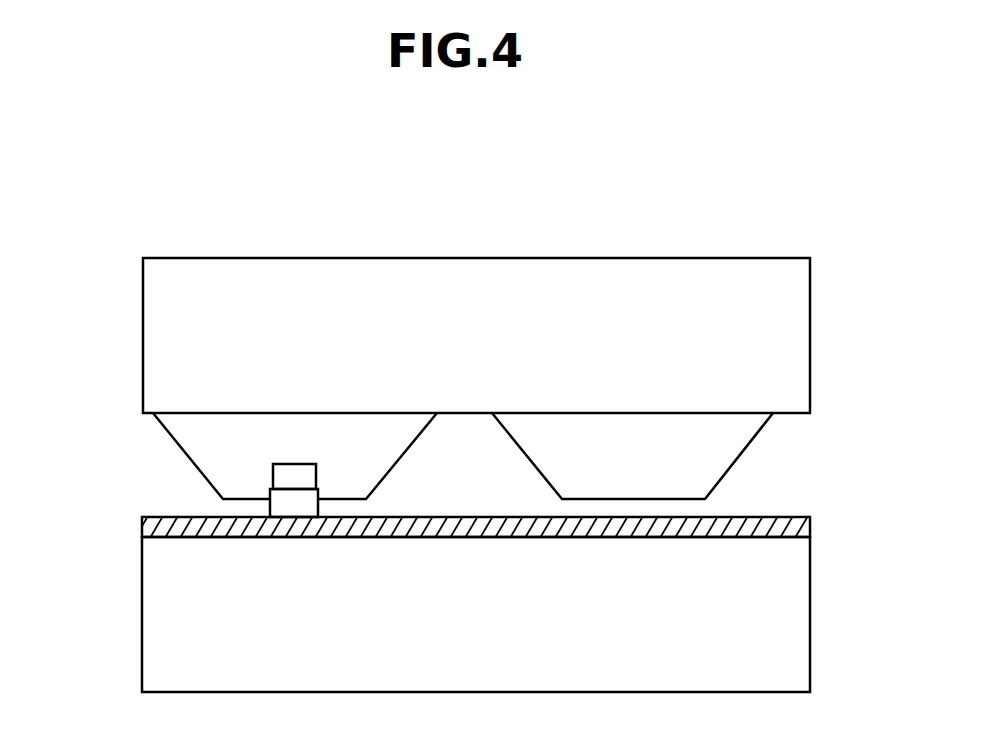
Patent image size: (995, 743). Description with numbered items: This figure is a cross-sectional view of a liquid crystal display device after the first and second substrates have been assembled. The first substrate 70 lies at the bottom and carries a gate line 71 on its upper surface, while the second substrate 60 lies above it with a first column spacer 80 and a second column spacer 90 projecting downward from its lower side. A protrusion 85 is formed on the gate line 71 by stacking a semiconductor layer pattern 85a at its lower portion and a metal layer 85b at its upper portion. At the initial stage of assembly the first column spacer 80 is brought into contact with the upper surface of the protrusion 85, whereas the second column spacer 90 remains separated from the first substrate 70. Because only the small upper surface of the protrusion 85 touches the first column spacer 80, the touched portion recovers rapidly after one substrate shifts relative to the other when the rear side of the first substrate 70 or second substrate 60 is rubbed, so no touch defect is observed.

The second substrate 60 is at (800, 328).
The first substrate 70 is at (797, 613).
The gate line 71 is at (800, 530).
The first column spacer 80 is at (392, 452).
The second column spacer 90 is at (732, 450).
The protrusion 85 is at (164, 490).
The semiconductor layer pattern 85a is at (280, 505).
The metal layer 85b is at (273, 483).